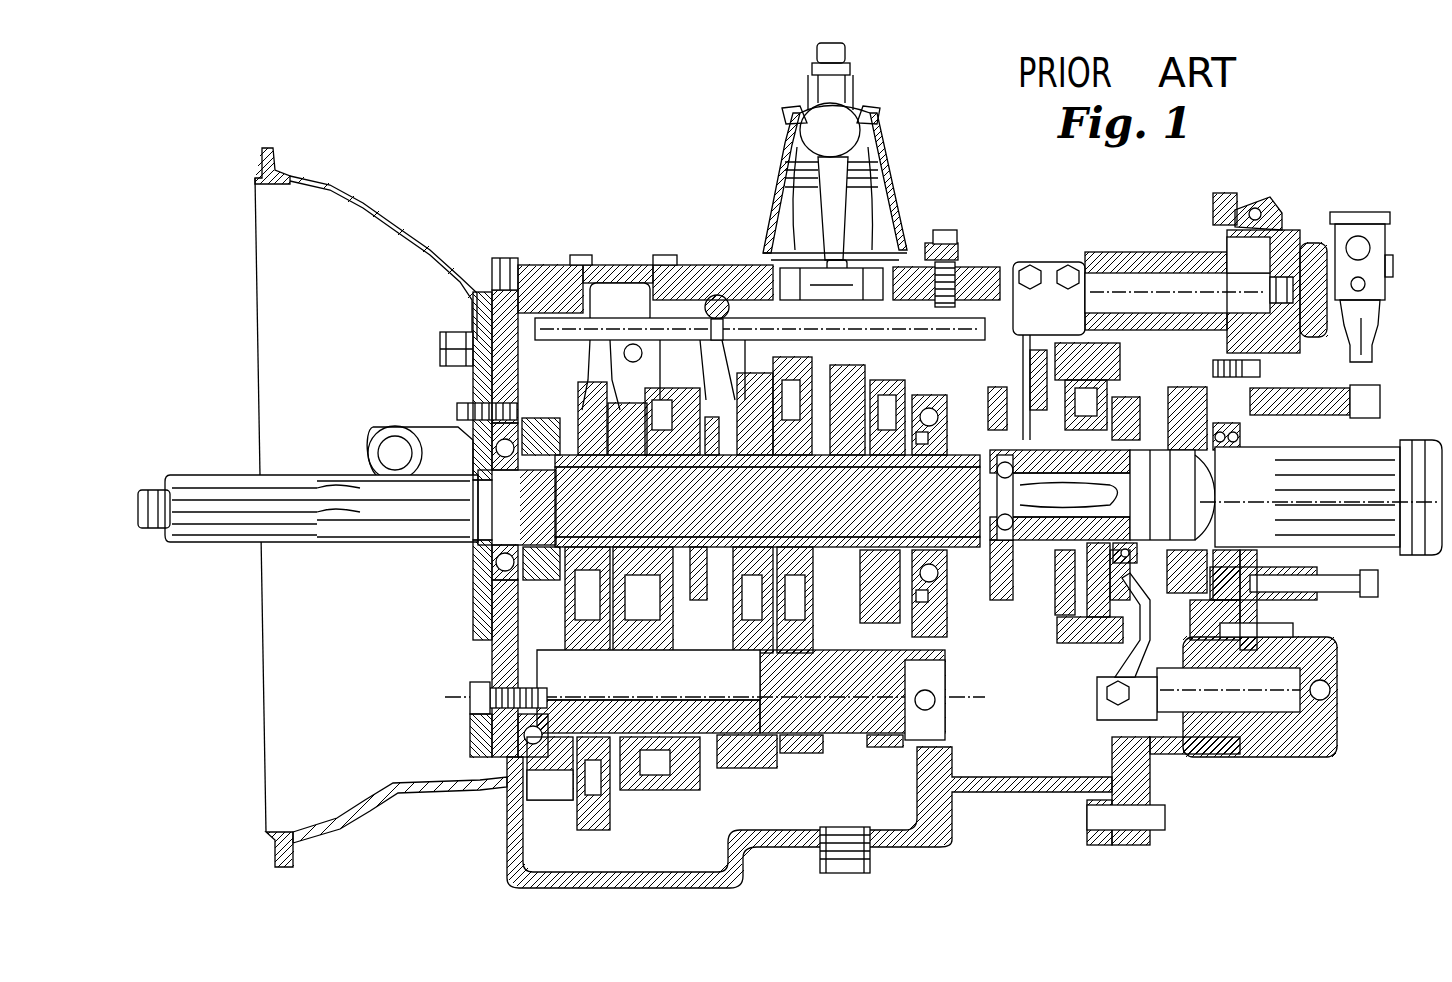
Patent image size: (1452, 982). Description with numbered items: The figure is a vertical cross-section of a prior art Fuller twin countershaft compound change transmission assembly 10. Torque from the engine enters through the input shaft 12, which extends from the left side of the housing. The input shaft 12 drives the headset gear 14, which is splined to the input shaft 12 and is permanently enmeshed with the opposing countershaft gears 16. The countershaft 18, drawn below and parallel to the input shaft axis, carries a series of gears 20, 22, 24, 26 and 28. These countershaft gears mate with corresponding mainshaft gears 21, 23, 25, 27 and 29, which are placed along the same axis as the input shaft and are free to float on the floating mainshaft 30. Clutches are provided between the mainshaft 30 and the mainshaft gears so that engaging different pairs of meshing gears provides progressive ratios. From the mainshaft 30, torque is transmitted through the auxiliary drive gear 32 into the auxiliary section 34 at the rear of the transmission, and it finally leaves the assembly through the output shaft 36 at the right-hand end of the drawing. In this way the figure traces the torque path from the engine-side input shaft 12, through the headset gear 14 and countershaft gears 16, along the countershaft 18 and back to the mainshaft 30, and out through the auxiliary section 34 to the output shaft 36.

The twin countershaft compound change transmission assembly 10 is at (248, 130).
The input shaft 12 is at (218, 544).
The headset gear 14 is at (525, 292).
The countershaft gears 16 is at (545, 786).
The countershaft 18 is at (472, 718).
The countershaft gear 20 is at (636, 780).
The mainshaft gear 21 is at (541, 418).
The countershaft gear 22 is at (668, 780).
The mainshaft gear 23 is at (612, 382).
The countershaft gear 24 is at (755, 766).
The mainshaft gear 25 is at (663, 388).
The countershaft gear 26 is at (812, 748).
The mainshaft gear 27 is at (706, 415).
The countershaft gear 28 is at (887, 740).
The mainshaft gear 29 is at (773, 360).
The floating mainshaft 30 is at (692, 478).
The auxiliary drive gear 32 is at (955, 412).
The auxiliary section 34 is at (1205, 218).
The output shaft 36 is at (1372, 463).